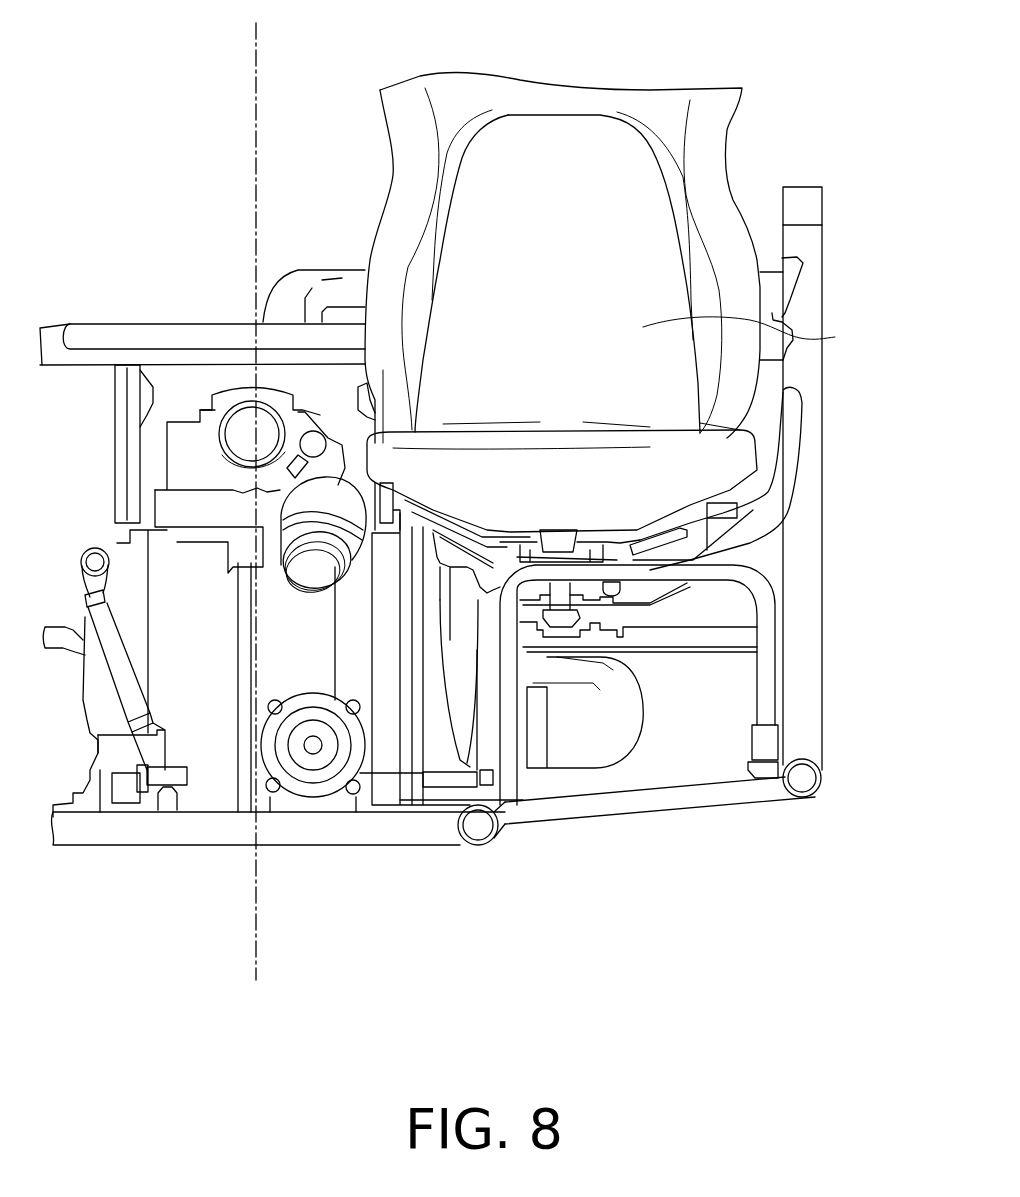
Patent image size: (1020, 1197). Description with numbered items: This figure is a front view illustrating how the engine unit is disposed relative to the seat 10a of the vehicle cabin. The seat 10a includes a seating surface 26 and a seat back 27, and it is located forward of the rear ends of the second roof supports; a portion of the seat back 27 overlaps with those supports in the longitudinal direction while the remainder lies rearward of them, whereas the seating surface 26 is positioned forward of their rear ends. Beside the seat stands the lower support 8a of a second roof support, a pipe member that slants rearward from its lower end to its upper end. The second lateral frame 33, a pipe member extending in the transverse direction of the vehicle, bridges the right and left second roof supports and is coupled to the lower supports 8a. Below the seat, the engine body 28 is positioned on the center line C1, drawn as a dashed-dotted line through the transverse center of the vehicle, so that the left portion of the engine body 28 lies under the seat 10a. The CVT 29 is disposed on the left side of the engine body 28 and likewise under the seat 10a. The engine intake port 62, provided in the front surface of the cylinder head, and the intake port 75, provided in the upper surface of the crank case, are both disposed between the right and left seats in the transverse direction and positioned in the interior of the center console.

The seat 10a is at (540, 150).
The seat back 27 is at (765, 331).
The lower support 8a is at (806, 481).
The seating surface 26 is at (683, 490).
The second lateral frame 33 is at (163, 337).
The engine intake port 62 is at (242, 407).
The engine body 28 is at (215, 765).
The intake port 75 is at (323, 568).
The CVT 29 is at (438, 752).
The center line C1 is at (256, 42).